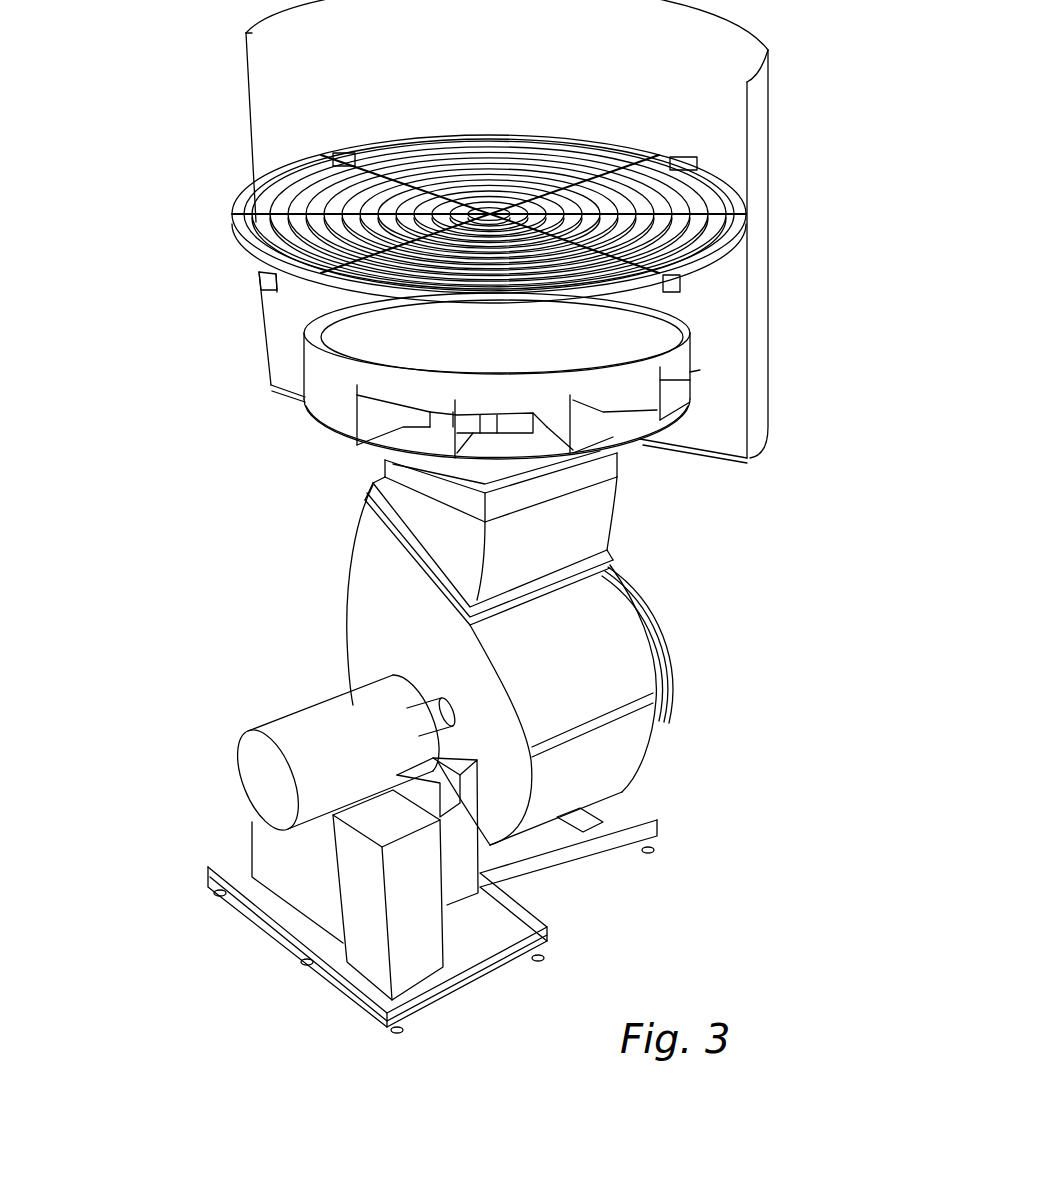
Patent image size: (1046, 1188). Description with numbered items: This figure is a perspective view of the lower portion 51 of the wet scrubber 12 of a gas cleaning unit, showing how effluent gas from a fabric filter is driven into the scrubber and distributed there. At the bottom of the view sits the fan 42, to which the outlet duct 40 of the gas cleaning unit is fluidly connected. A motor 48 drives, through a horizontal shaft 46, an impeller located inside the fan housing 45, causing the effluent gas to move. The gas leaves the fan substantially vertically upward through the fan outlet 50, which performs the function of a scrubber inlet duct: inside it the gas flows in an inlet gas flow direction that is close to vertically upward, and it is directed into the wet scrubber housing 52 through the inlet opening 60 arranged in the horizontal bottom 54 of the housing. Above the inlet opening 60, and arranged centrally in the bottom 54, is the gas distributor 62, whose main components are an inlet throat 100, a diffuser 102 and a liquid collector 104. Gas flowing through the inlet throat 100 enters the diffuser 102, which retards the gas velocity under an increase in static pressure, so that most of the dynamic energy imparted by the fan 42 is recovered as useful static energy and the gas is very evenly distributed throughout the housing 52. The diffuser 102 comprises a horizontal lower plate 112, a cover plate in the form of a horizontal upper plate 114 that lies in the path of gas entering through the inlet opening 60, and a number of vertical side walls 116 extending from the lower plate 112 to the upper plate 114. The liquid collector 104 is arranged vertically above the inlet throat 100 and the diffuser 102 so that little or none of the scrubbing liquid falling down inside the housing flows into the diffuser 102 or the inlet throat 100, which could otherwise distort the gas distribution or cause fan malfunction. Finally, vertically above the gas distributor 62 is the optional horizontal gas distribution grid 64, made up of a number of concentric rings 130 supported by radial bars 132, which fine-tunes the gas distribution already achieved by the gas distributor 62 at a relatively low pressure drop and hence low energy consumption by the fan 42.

The wet scrubber 12 is at (173, 528).
The outlet duct 40 is at (633, 597).
The fan 42 is at (414, 833).
The housing 45 is at (486, 665).
The horizontal shaft 46 is at (430, 700).
The motor 48 is at (253, 777).
The fan outlet 50 is at (527, 525).
The lower portion 51 is at (136, 203).
The housing 52 is at (265, 368).
The horizontal bottom 54 is at (287, 388).
The inlet opening 60 is at (445, 474).
The gas distributor 62 is at (501, 346).
The horizontal gas distribution grid 64 is at (447, 197).
The inlet throat 100 is at (370, 493).
The diffuser 102 is at (345, 410).
The liquid collector 104 is at (633, 322).
The horizontal lower plate 112 is at (673, 400).
The horizontal upper plate 114 is at (677, 368).
The vertical side walls 116 is at (690, 370).
The concentric rings 130 is at (280, 207).
The radial bars 132 is at (357, 157).